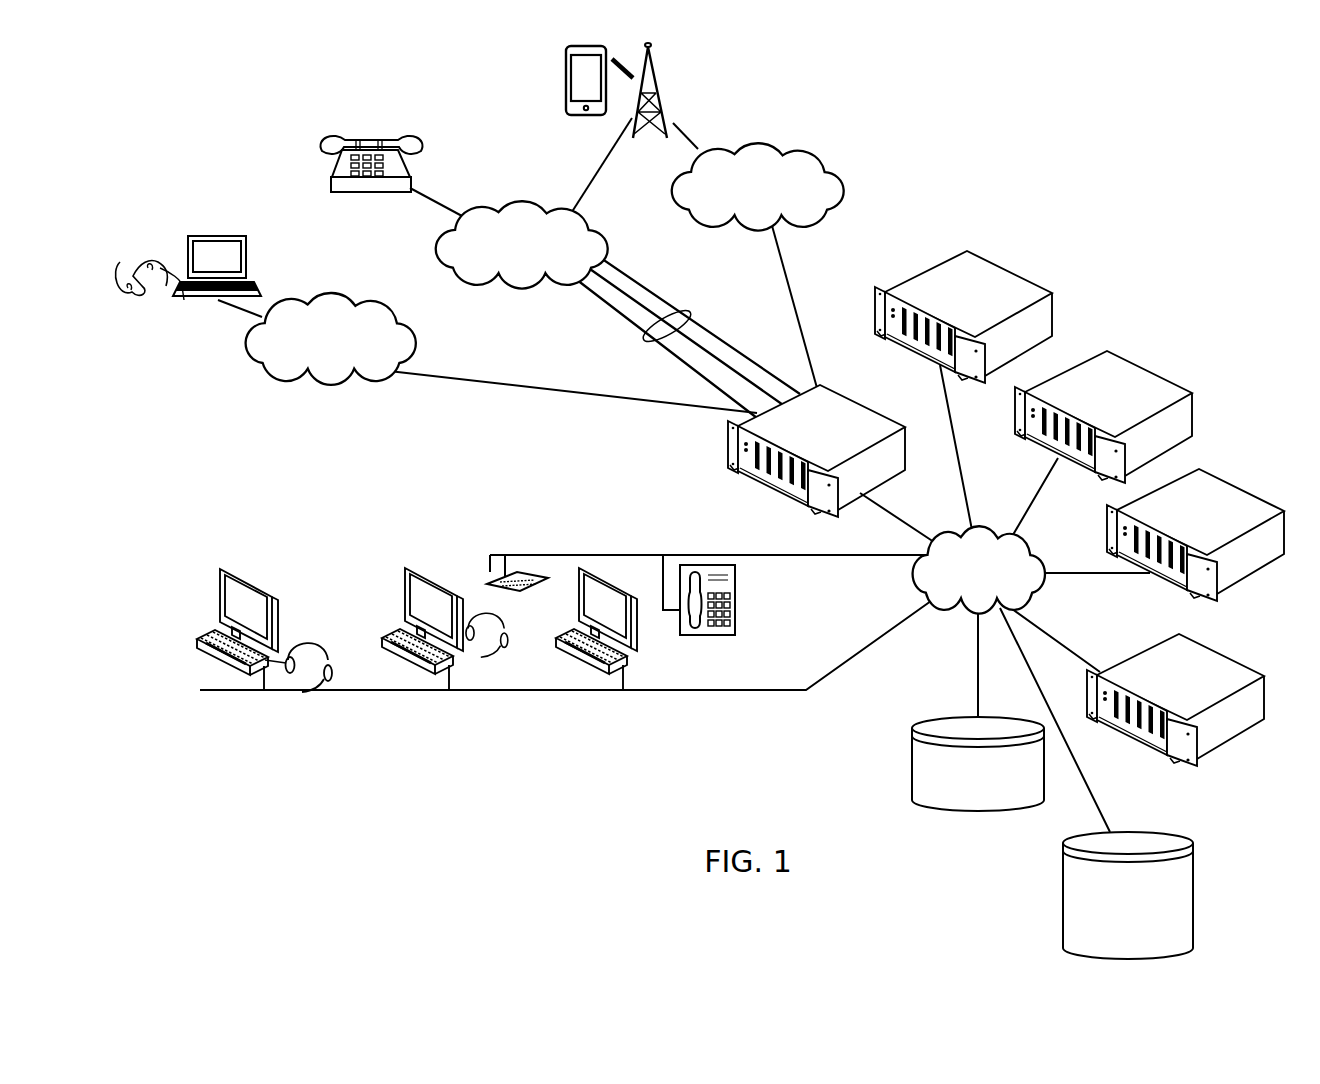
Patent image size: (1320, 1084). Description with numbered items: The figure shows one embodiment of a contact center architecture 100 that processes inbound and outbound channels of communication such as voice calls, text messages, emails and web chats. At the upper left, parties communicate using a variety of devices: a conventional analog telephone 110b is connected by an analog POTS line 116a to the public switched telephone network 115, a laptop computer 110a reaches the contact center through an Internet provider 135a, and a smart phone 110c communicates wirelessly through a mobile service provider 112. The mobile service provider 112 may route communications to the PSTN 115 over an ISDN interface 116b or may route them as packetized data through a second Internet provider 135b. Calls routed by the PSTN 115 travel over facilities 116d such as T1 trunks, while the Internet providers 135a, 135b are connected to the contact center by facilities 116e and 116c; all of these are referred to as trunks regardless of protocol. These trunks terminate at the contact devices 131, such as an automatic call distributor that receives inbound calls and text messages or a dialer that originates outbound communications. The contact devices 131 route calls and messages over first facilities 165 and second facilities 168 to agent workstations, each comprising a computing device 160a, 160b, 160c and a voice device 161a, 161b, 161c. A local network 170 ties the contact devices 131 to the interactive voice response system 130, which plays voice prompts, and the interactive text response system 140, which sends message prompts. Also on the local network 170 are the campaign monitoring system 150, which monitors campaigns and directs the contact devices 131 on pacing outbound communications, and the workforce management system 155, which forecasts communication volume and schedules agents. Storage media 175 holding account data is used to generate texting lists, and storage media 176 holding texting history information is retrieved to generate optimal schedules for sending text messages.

The contact center architecture 100 is at (981, 188).
The laptop computer 110a is at (217, 226).
The analog telephone 110b is at (410, 172).
The smart phone 110c is at (558, 86).
The mobile service provider 112 is at (662, 100).
The public switched telephone network 115 is at (522, 244).
The POTS line 116a is at (440, 205).
The ISDN interface 116b is at (610, 150).
The facility 116c is at (800, 308).
The facilities 116d is at (650, 336).
The facility 116e is at (480, 376).
The interactive voice response system 130 is at (1195, 535).
The contact device 131 is at (816, 451).
The Internet provider 135a is at (331, 339).
The Internet provider 135b is at (758, 186).
The interactive text response system 140 is at (1103, 417).
The campaign monitoring system 150 is at (963, 317).
The workforce management system 155 is at (1175, 700).
The computing device 160a is at (280, 617).
The computing device 160b is at (465, 612).
The computing device 160c is at (636, 618).
The voice device 161a is at (322, 660).
The voice device 161b is at (508, 640).
The voice device 161c is at (718, 636).
The first facilities 165 is at (770, 552).
The second facilities 168 is at (778, 694).
The local network 170 is at (918, 598).
The storage media 175 is at (978, 764).
The storage media 176 is at (1128, 895).